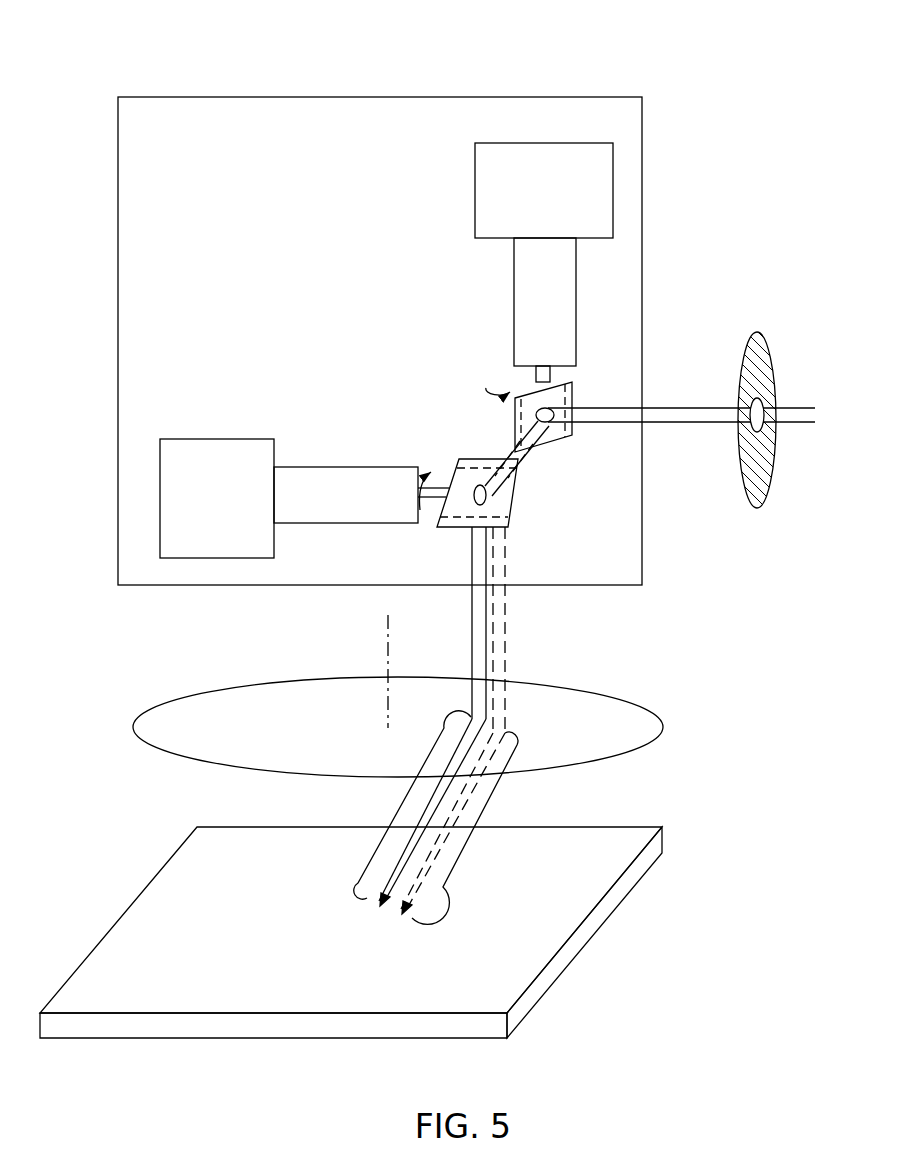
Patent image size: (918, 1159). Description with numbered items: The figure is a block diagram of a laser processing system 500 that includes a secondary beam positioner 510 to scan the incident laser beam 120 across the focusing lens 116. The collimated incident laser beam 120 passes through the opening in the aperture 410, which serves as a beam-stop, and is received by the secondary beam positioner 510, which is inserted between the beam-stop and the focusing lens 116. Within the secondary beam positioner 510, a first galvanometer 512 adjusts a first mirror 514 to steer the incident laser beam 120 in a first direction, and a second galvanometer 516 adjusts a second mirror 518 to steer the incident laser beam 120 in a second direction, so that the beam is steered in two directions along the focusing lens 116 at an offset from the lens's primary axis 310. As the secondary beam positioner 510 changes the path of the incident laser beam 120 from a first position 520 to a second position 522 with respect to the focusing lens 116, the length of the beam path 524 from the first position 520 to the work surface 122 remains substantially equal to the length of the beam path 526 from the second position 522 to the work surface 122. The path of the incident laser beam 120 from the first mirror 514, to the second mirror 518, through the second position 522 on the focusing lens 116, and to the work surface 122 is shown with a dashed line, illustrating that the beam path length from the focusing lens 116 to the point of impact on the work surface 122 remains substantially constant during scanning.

The laser processing system 500 is at (205, 63).
The secondary beam positioner 510 is at (212, 241).
The first galvanometer 512 is at (524, 202).
The first mirror 514 is at (573, 437).
The second galvanometer 516 is at (193, 504).
The second mirror 518 is at (490, 458).
The aperture 410 is at (741, 366).
The incident laser beam 120 is at (668, 423).
The focusing lens 116 is at (243, 688).
The primary axis 310 is at (386, 645).
The first position 520 is at (466, 712).
The second position 522 is at (514, 726).
The beam path 524 is at (414, 782).
The beam path 526 is at (478, 827).
The work surface 122 is at (117, 967).